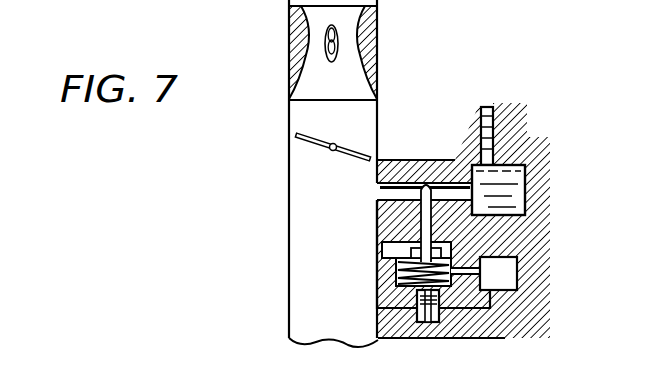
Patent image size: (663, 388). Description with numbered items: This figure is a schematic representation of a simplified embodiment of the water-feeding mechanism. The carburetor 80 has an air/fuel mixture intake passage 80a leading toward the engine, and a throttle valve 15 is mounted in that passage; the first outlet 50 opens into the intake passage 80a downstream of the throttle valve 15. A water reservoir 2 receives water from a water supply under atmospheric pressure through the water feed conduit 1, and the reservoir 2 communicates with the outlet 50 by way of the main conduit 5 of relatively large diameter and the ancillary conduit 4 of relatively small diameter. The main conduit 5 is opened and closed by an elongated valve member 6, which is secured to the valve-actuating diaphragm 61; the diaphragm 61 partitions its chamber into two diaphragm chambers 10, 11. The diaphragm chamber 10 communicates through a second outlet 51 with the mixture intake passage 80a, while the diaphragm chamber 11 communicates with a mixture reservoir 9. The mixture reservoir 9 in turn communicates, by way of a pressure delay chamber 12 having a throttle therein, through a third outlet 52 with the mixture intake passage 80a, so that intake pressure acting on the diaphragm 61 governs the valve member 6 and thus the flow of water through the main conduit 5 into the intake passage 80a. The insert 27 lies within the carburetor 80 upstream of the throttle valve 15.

The water feed conduit 1 is at (487, 107).
The water reservoir 2 is at (512, 168).
The ancillary conduit 4 is at (401, 181).
The main conduit 5 is at (446, 187).
The valve member 6 is at (425, 186).
The mixture reservoir 9 is at (517, 277).
The diaphragm chamber 10 is at (412, 253).
The diaphragm chamber 11 is at (393, 277).
The pressure delay chamber 12 is at (433, 316).
The throttle valve 15 is at (297, 134).
The venturi insert 27 is at (293, 47).
The first outlet 50 is at (380, 193).
The second outlet 51 is at (408, 252).
The third outlet 52 is at (412, 306).
The valve-actuating diaphragm 61 is at (410, 262).
The carburetor 80 is at (287, 166).
The air/fuel mixture intake passage 80a is at (303, 223).